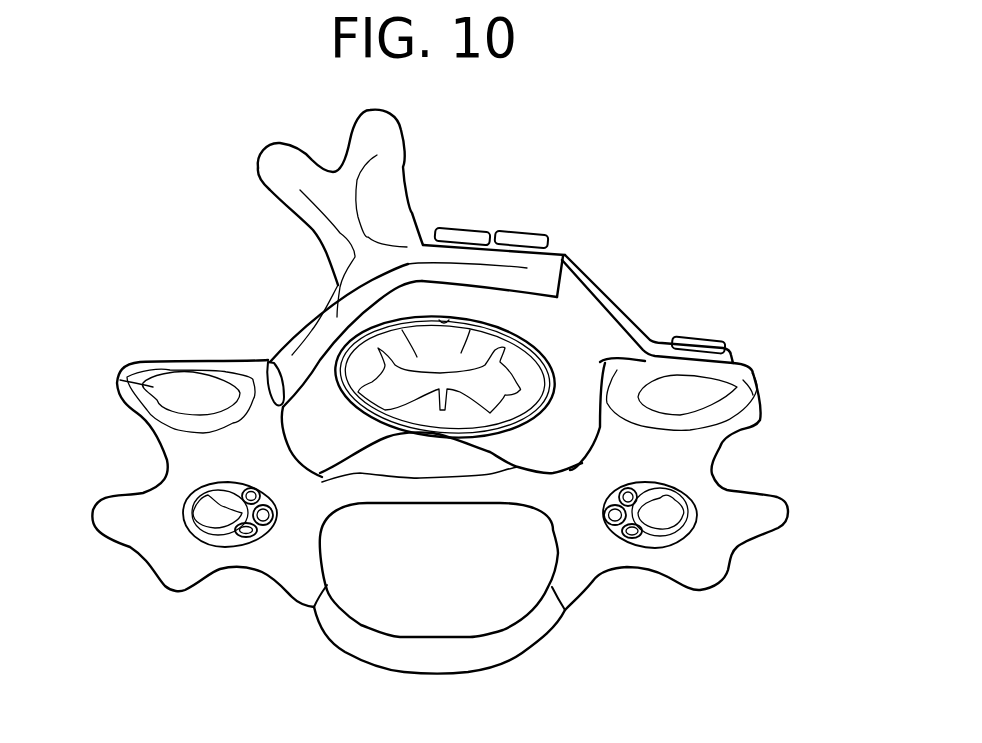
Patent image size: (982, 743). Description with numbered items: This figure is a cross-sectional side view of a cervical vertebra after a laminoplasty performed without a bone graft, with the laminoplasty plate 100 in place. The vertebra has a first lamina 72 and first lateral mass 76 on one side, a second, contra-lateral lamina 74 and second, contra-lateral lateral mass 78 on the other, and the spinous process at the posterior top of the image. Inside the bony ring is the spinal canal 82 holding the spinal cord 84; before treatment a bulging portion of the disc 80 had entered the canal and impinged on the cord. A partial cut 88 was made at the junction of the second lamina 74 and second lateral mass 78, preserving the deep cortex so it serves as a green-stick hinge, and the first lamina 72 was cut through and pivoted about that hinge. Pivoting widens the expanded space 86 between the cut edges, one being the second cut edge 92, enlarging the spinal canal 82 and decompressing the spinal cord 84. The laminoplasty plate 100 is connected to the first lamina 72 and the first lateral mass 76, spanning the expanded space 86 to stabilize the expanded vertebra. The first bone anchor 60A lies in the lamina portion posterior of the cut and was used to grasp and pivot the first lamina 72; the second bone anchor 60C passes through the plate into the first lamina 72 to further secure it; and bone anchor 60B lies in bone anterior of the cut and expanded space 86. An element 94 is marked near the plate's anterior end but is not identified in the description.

The laminoplasty plate 100 is at (620, 240).
The first lamina 72 is at (497, 271).
The second, contra-lateral lamina 74 is at (293, 330).
The first lateral mass 76 is at (745, 388).
The second, contra-lateral lateral mass 78 is at (127, 380).
The disc 80 is at (395, 458).
The spinal canal 82 is at (298, 442).
The spinal cord 84 is at (365, 400).
The expanded space 86 is at (590, 322).
The partial cut 88 is at (267, 361).
The second cut edge 92 is at (553, 298).
The lateral mass surface 94 is at (620, 360).
The first bone anchor 60A is at (451, 229).
The bone anchor 60B is at (693, 338).
The second bone anchor 60C is at (517, 232).